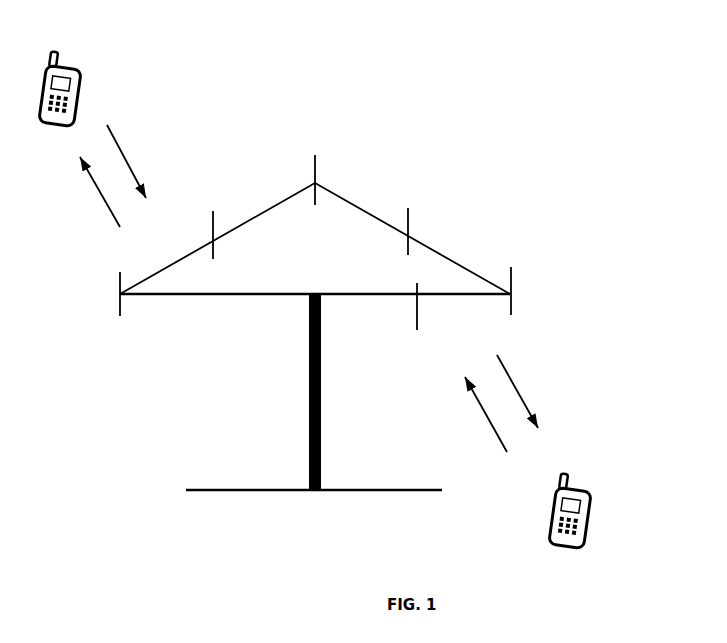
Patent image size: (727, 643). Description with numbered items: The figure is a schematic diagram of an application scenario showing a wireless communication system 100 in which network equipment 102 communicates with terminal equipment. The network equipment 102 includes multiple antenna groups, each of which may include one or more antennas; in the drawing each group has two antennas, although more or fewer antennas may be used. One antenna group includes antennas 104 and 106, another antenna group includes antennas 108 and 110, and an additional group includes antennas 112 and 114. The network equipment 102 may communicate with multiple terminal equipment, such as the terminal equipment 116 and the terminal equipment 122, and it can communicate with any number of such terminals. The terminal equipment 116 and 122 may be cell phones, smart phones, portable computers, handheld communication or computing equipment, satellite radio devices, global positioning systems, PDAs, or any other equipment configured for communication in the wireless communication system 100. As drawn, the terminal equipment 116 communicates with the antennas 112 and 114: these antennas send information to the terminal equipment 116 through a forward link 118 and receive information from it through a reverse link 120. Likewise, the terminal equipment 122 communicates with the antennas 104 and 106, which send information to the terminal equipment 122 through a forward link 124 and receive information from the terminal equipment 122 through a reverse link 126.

The communication system 100 is at (466, 62).
The network equipment 102 is at (322, 435).
The antenna 104 is at (123, 298).
The antenna 106 is at (215, 245).
The antenna 108 is at (318, 172).
The antenna 110 is at (412, 222).
The antenna 112 is at (514, 277).
The antenna 114 is at (418, 320).
The terminal equipment 116 is at (593, 505).
The forward link 118 is at (512, 380).
The reverse link 120 is at (497, 432).
The terminal equipment 122 is at (72, 72).
The forward link 124 is at (100, 195).
The reverse link 126 is at (122, 146).